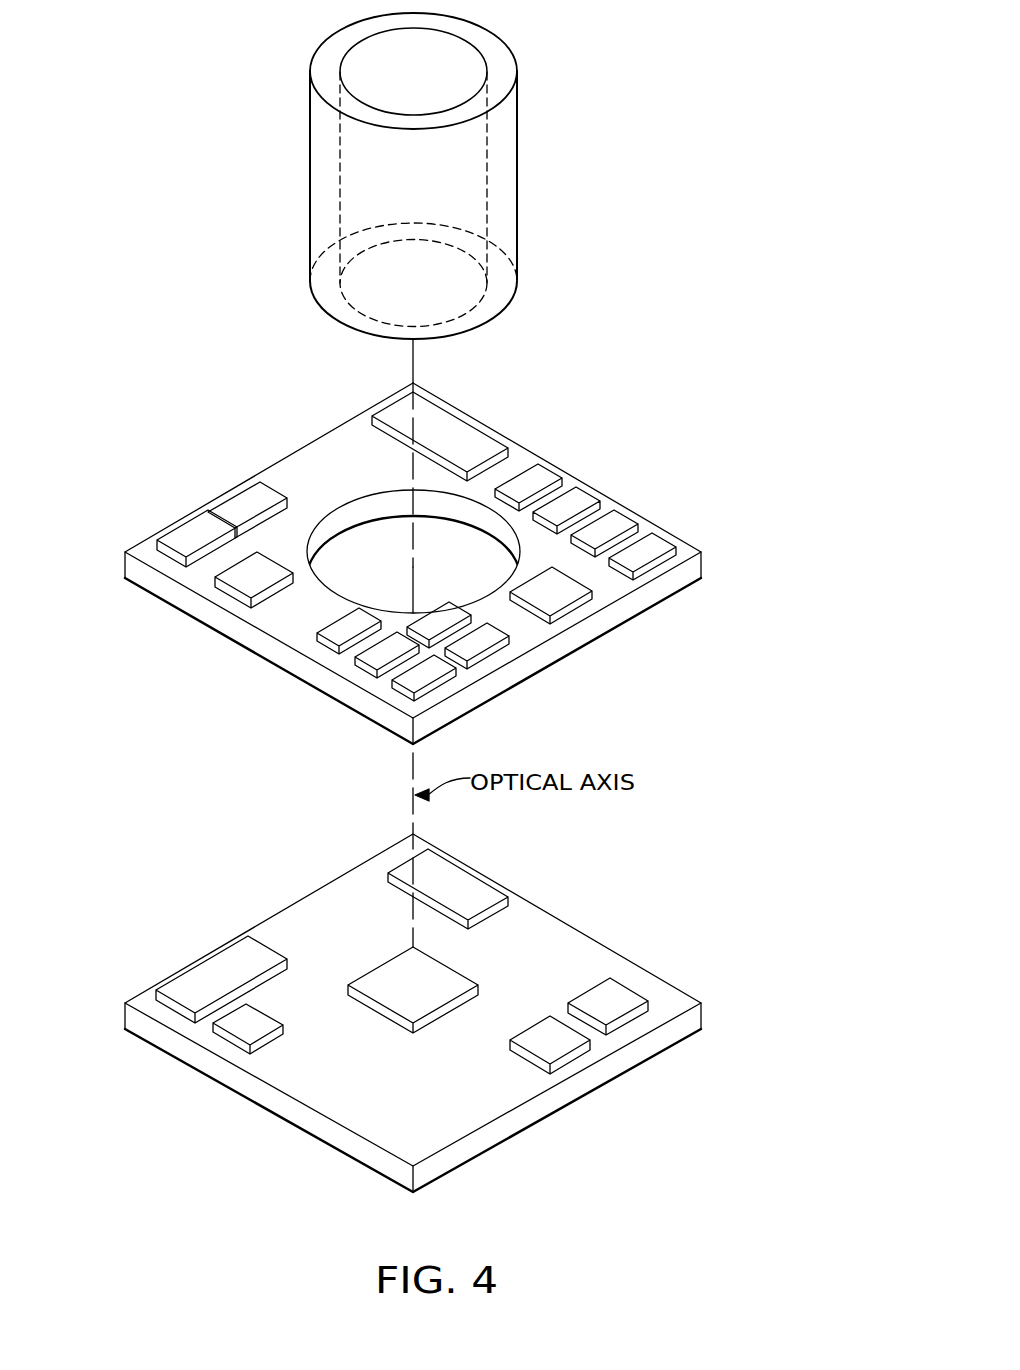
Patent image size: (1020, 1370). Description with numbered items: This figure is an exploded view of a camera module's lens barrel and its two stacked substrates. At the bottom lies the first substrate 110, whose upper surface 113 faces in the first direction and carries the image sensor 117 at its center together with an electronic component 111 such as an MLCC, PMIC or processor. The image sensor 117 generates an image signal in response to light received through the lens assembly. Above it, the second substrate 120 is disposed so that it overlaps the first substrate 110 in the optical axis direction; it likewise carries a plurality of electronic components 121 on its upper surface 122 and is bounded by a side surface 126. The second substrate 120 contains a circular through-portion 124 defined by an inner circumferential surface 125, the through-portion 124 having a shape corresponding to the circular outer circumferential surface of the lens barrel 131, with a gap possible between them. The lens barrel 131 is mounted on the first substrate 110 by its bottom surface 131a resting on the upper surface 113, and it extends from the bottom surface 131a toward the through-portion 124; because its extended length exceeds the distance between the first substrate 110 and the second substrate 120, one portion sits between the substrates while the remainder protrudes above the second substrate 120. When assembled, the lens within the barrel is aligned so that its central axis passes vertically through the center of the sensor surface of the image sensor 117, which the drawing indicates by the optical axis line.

The first substrate 110 is at (697, 1015).
The electronic component 111 is at (615, 1005).
The upper surface of the first substrate 113 is at (352, 892).
The image sensor 117 is at (375, 982).
The second substrate 120 is at (137, 468).
The electronic component 121 is at (613, 516).
The upper surface of the second substrate 122 is at (352, 440).
The through-portion 124 is at (397, 551).
The inner circumferential surface 125 is at (322, 537).
The side surface of the second substrate 126 is at (167, 582).
The lens barrel 131 is at (500, 173).
The bottom surface of the lens barrel 131a is at (497, 296).